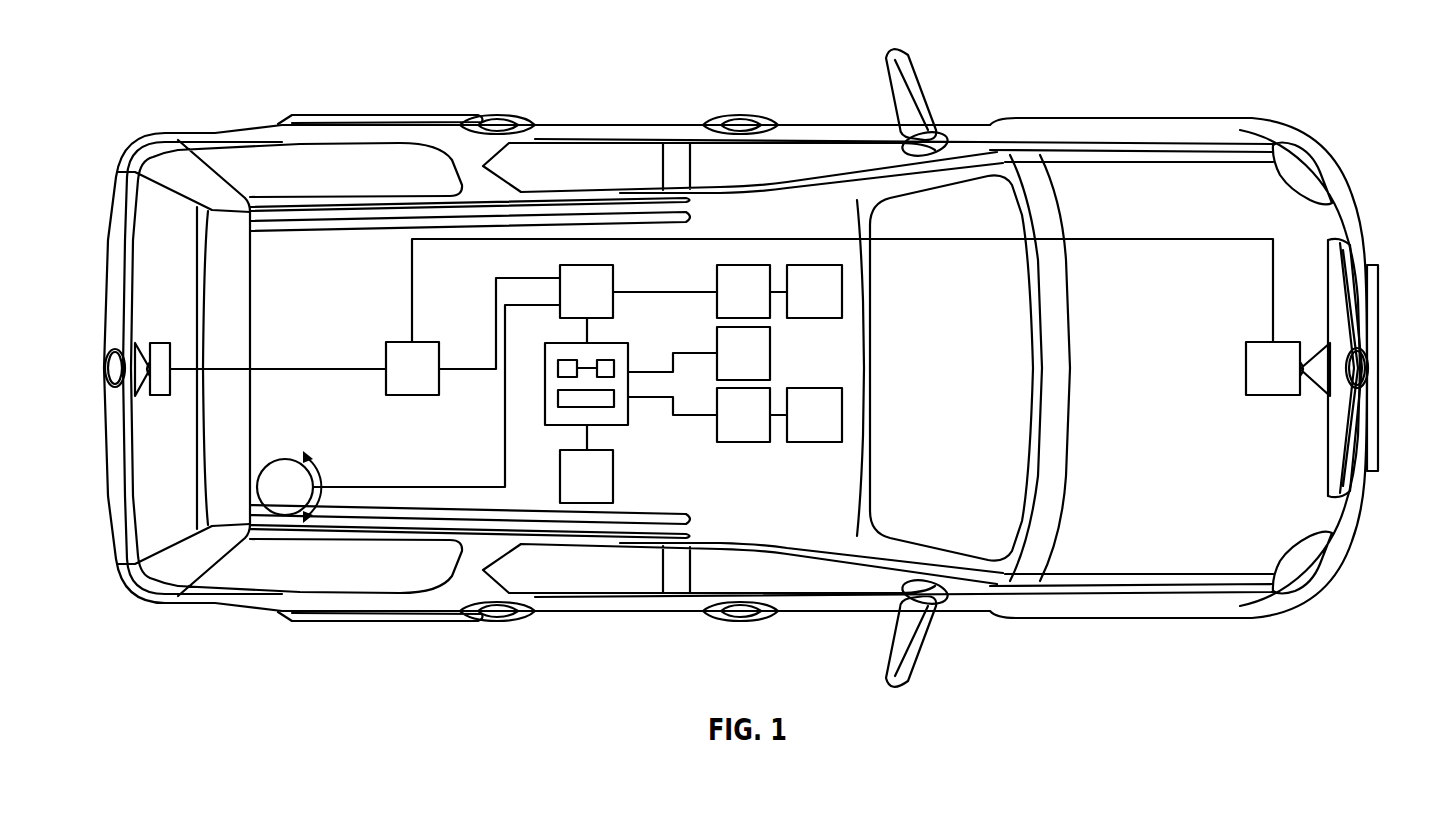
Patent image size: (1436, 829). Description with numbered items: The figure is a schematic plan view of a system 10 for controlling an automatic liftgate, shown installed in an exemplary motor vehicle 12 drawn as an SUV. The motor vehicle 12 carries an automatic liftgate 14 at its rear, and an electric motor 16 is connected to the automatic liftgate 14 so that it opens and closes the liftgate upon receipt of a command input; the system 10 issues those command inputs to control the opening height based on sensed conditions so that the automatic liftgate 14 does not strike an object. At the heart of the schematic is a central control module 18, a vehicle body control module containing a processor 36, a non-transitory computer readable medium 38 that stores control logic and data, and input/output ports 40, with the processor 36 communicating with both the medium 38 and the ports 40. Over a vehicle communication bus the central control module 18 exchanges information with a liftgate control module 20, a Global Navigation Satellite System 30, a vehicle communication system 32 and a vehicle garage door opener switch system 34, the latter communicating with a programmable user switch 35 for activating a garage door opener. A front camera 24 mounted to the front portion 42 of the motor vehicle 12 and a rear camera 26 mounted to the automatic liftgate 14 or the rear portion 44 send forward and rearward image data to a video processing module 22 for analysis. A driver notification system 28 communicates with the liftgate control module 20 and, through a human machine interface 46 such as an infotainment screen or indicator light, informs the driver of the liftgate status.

The system for controlling an automatic liftgate 10 is at (701, 250).
The motor vehicle 12 is at (1130, 117).
The automatic liftgate 14 is at (160, 208).
The electric motor 16 is at (285, 460).
The central control module 18 is at (612, 427).
The liftgate control module 20 is at (613, 277).
The video processing module 22 is at (412, 397).
The front camera 24 is at (1273, 398).
The rear camera 26 is at (162, 342).
The driver notification system 28 is at (743, 263).
The Global Navigation Satellite System (GNSS) 30 is at (770, 345).
The vehicle communication system 32 is at (743, 443).
The vehicle garage door opener switch system 34 is at (613, 475).
The programmable user switch 35 is at (842, 415).
The processor 36 is at (568, 360).
The non-transitory computer readable medium 38 is at (607, 360).
The input/output ports 40 is at (567, 410).
The front portion 42 is at (1357, 205).
The rear portion 44 is at (323, 133).
The human machine interface (HMI) 46 is at (842, 295).